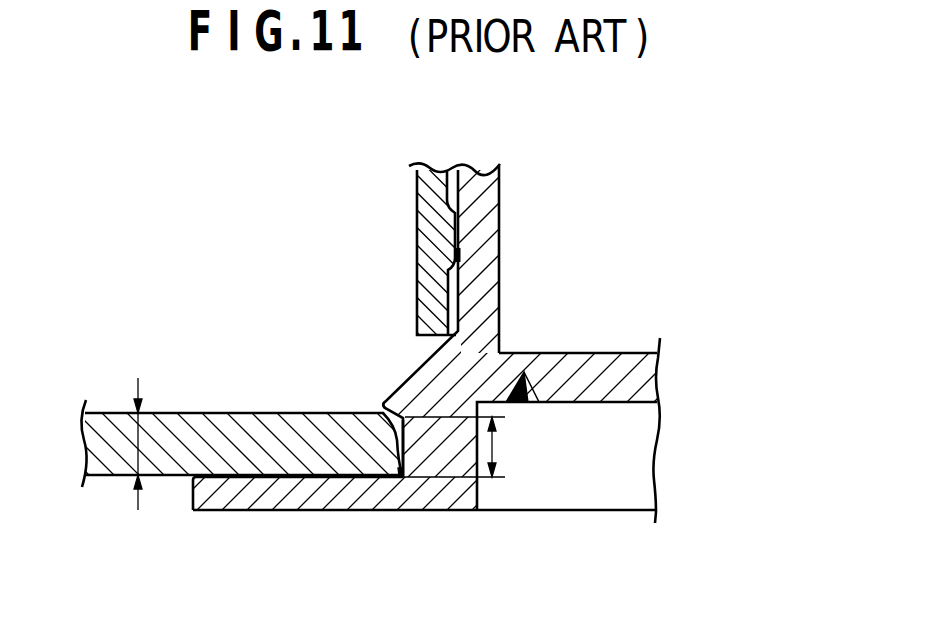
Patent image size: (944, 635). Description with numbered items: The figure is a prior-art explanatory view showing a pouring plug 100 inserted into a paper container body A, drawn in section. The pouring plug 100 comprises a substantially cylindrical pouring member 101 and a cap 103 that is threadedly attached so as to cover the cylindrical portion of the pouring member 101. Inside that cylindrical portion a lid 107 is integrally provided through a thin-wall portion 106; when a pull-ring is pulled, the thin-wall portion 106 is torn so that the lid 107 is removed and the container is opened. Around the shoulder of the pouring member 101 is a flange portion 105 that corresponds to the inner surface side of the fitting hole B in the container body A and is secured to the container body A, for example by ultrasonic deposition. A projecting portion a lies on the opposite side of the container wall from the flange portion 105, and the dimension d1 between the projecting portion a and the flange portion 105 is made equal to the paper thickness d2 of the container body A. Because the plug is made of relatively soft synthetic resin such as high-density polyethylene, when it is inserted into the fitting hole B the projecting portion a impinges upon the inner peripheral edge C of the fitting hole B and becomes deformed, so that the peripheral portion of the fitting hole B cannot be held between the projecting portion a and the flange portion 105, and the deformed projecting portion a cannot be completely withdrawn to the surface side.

The pouring plug 100 is at (382, 236).
The pouring member 101 is at (499, 223).
The cap 103 is at (417, 200).
The flange portion 105 is at (418, 372).
The thin-wall portion 106 is at (525, 383).
The lid 107 is at (612, 354).
The container body A is at (112, 412).
The projecting portion a is at (383, 402).
The fitting hole B is at (401, 478).
The inner peripheral edge C is at (407, 445).
The dimension between projecting portion and flange portion d1 is at (490, 446).
The paper thickness d2 is at (135, 440).